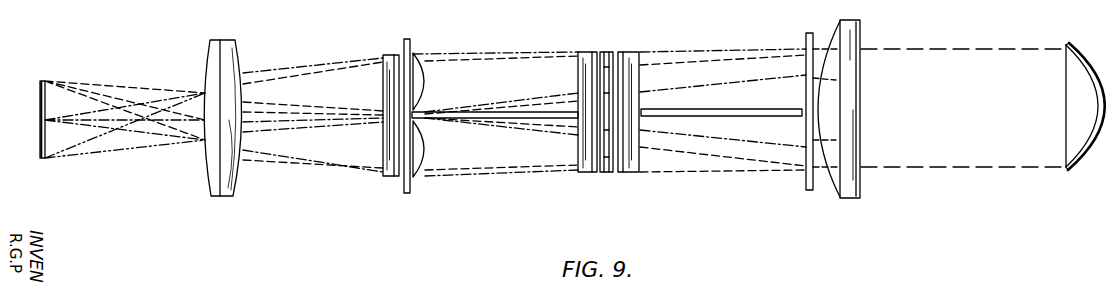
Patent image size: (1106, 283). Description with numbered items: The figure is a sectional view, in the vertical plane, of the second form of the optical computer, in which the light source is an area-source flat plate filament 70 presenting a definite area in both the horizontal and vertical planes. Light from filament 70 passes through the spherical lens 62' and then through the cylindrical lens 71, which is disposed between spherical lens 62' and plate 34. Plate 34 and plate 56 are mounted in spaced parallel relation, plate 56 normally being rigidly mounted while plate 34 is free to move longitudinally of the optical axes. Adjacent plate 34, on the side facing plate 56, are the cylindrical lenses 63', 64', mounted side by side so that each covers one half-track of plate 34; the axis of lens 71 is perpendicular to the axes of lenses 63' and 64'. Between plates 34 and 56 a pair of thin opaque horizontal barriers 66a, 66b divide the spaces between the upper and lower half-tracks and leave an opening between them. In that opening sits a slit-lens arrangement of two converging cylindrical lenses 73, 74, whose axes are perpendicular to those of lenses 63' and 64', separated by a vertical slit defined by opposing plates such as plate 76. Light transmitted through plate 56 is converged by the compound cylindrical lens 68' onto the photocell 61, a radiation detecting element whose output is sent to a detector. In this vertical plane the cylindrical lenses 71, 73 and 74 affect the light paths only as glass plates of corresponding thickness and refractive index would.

The flat plate filament 70 is at (37, 92).
The spherical lens 62' is at (202, 118).
The cylindrical lens 71 is at (383, 89).
The plate 34 is at (403, 42).
The cylindrical lens 63' is at (439, 81).
The cylindrical lens 64' is at (439, 149).
The horizontal barrier 66a is at (507, 118).
The converging cylindrical lens 73 is at (583, 51).
The plate 76 is at (608, 173).
The converging cylindrical lens 74 is at (636, 51).
The horizontal barrier 66b is at (722, 117).
The plate 56 is at (805, 40).
The compound cylindrical lens 68' is at (860, 107).
The photocell 61 is at (1076, 31).